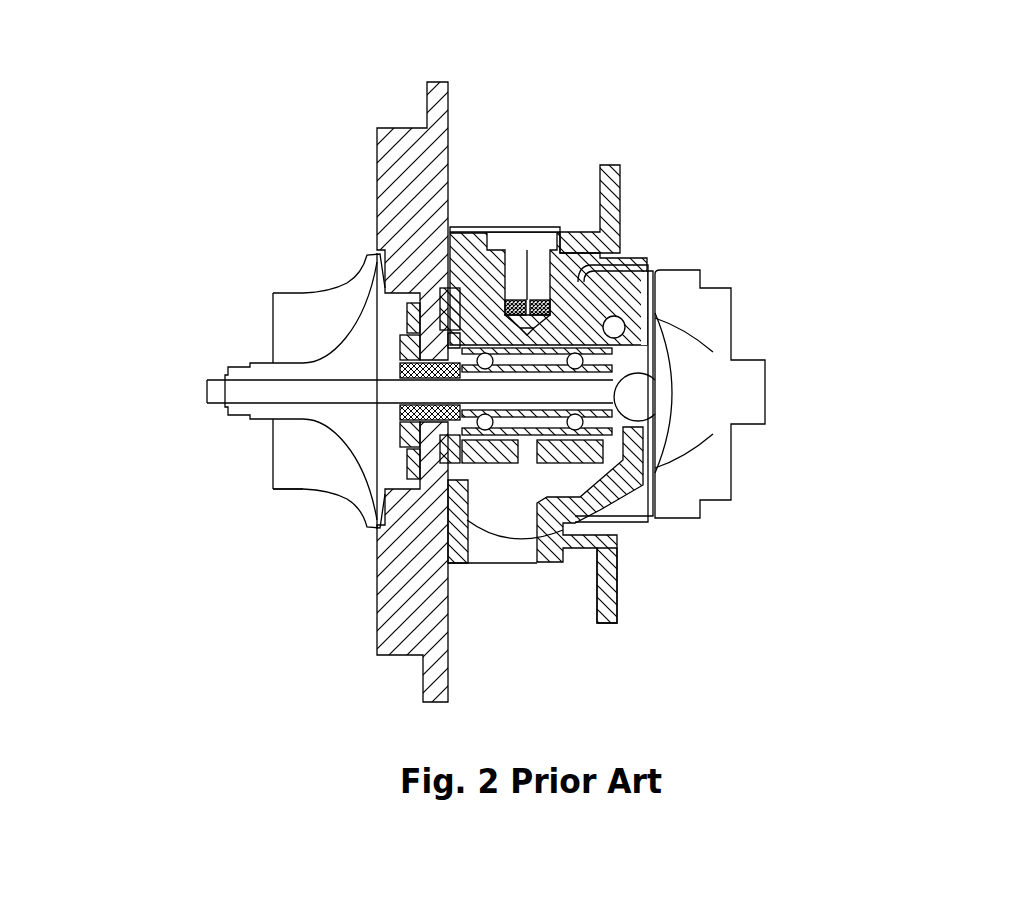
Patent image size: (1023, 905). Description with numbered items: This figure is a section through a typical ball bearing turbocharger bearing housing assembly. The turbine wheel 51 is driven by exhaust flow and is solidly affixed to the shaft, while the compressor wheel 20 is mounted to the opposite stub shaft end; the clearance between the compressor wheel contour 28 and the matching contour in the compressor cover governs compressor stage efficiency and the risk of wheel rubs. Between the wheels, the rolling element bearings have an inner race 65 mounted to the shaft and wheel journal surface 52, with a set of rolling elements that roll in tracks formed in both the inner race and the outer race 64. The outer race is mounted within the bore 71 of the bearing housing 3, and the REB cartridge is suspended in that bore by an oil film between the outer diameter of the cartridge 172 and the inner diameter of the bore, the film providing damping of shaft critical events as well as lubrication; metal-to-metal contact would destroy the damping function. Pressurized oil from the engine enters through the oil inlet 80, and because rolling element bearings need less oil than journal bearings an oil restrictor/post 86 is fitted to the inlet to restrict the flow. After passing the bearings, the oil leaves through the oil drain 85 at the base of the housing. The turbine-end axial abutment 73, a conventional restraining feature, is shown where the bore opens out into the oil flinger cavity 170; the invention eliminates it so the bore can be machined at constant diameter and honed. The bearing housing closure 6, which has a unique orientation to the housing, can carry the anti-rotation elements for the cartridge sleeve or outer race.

The bearing housing 3 is at (612, 194).
The bearing housing closure 6 is at (422, 165).
The compressor wheel 20 is at (358, 440).
The compressor wheel contour 28 is at (338, 509).
The turbine wheel 51 is at (682, 463).
The shaft surface 52 is at (516, 398).
The outer race 64 is at (550, 437).
The inner race 65 is at (537, 410).
The bearing housing bore 71 is at (470, 330).
The turbine-end axial abutment 73 is at (613, 322).
The oil inlet 80 is at (528, 270).
The oil drain 85 is at (498, 548).
The oil restrictor/post 86 is at (513, 300).
The oil flinger cavity 170 is at (603, 347).
The cartridge outer diameter 172 is at (470, 361).